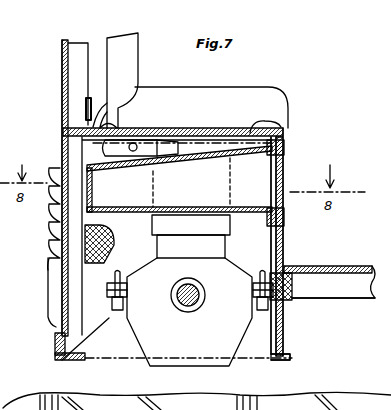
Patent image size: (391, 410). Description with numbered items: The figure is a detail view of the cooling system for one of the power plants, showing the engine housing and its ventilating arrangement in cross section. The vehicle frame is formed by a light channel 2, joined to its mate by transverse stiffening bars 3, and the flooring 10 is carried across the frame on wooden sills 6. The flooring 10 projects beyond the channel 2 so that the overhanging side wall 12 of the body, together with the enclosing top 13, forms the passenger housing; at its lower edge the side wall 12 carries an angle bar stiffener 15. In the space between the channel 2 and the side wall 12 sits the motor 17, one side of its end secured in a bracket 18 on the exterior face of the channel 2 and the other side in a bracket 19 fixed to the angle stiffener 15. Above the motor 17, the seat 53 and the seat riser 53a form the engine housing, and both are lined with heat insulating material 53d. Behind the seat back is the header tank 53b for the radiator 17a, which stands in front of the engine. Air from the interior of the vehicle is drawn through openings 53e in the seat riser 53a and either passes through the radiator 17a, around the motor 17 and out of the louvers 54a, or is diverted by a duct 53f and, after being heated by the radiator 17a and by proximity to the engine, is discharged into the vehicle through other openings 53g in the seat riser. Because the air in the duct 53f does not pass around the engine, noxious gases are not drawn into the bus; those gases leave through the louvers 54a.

The channel 2 is at (283, 338).
The transverse stiffening bar 3 is at (340, 293).
The wooden sill 6 is at (292, 288).
The flooring 10 is at (353, 267).
The side wall 12 is at (63, 129).
The enclosing top 13 is at (390, 130).
The angle bar stiffener 15 is at (64, 358).
The motor 17 is at (230, 207).
The radiator 17a is at (80, 311).
The bracket 18 is at (255, 322).
The bracket 19 is at (110, 322).
The seat 53 is at (200, 130).
The seat riser 53a is at (275, 240).
The header tank 53b is at (78, 98).
The heat insulating material 53d is at (284, 125).
The opening 53e is at (141, 148).
The duct 53f is at (170, 181).
The opening 53g is at (284, 162).
The louver 54a is at (48, 230).